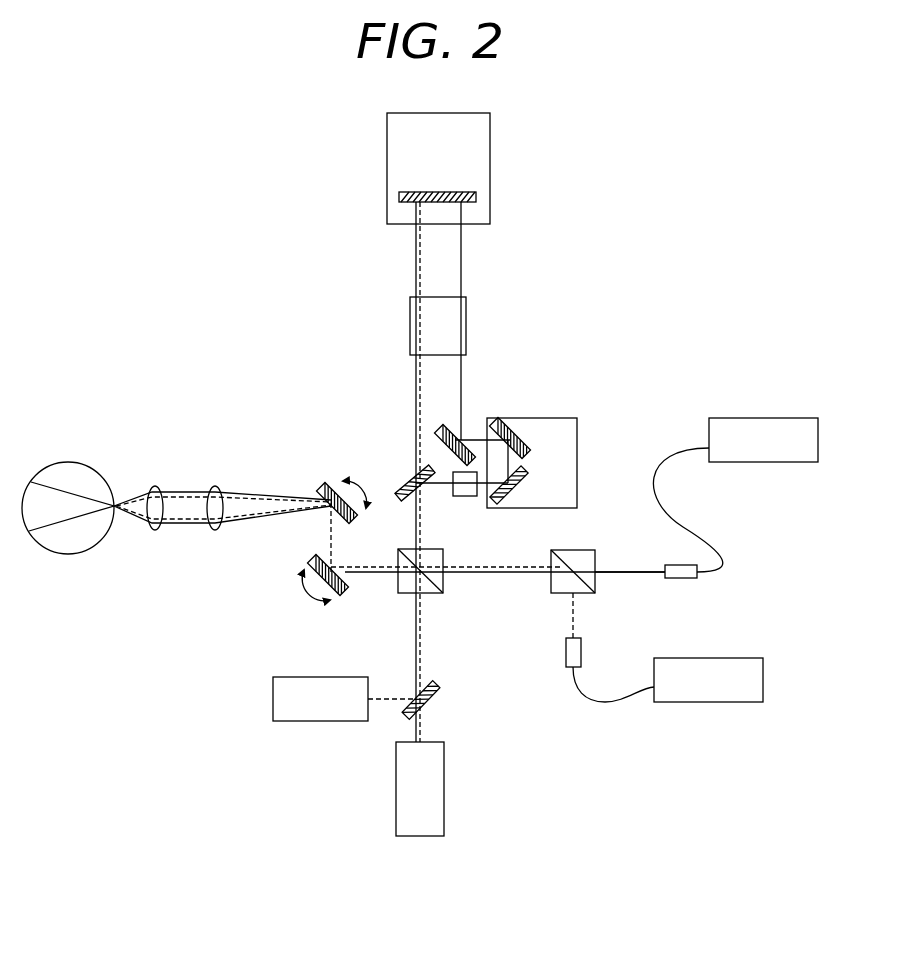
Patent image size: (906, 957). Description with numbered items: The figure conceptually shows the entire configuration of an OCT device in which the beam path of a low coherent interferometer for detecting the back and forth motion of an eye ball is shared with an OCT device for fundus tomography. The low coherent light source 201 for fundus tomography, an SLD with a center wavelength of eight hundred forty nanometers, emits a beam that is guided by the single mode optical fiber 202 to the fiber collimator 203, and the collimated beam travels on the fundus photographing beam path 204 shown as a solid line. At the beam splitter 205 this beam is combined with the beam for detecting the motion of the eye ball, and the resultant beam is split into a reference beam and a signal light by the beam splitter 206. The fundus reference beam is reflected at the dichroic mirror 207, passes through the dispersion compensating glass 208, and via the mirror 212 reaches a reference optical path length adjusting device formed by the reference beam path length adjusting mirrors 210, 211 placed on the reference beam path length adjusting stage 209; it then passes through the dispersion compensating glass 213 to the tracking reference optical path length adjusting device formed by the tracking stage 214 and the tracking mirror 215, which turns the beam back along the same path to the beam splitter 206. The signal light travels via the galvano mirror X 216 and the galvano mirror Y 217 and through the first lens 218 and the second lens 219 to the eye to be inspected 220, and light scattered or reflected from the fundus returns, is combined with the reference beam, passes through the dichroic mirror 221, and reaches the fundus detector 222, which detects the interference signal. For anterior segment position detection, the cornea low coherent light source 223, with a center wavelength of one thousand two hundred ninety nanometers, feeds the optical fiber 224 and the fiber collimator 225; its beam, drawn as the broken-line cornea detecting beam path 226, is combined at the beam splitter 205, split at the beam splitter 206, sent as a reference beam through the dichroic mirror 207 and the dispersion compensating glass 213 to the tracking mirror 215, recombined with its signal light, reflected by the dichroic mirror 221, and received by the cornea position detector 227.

The low coherent light source 201 is at (772, 418).
The optical fiber 202 is at (680, 447).
The fiber collimator 203 is at (682, 579).
The fundus photographing beam path 204 is at (620, 575).
The beam splitter 205 is at (551, 576).
The beam splitter 206 is at (403, 595).
The dichroic mirror 207 is at (405, 484).
The dispersion compensating glass 208 is at (465, 497).
The reference beam path length adjusting stage 209 is at (578, 440).
The reference beam path length adjusting mirror 210 is at (520, 489).
The reference beam path length adjusting mirror 211 is at (513, 430).
The mirror 212 is at (443, 432).
The dispersion compensating glass 213 is at (467, 311).
The tracking stage 214 is at (491, 128).
The tracking mirror 215 is at (477, 197).
The galvano mirror X 216 is at (312, 563).
The galvano mirror Y 217 is at (323, 488).
The first lens 218 is at (215, 486).
The second lens 219 is at (155, 486).
The eye to be inspected 220 is at (70, 462).
The dichroic mirror 221 is at (430, 704).
The fundus detector 222 is at (420, 837).
The cornea low coherent light source 223 is at (722, 703).
The optical fiber 224 is at (605, 703).
The fiber collimator 225 is at (566, 660).
The cornea detecting beam path 226 is at (572, 616).
The cornea position detector 227 is at (310, 722).